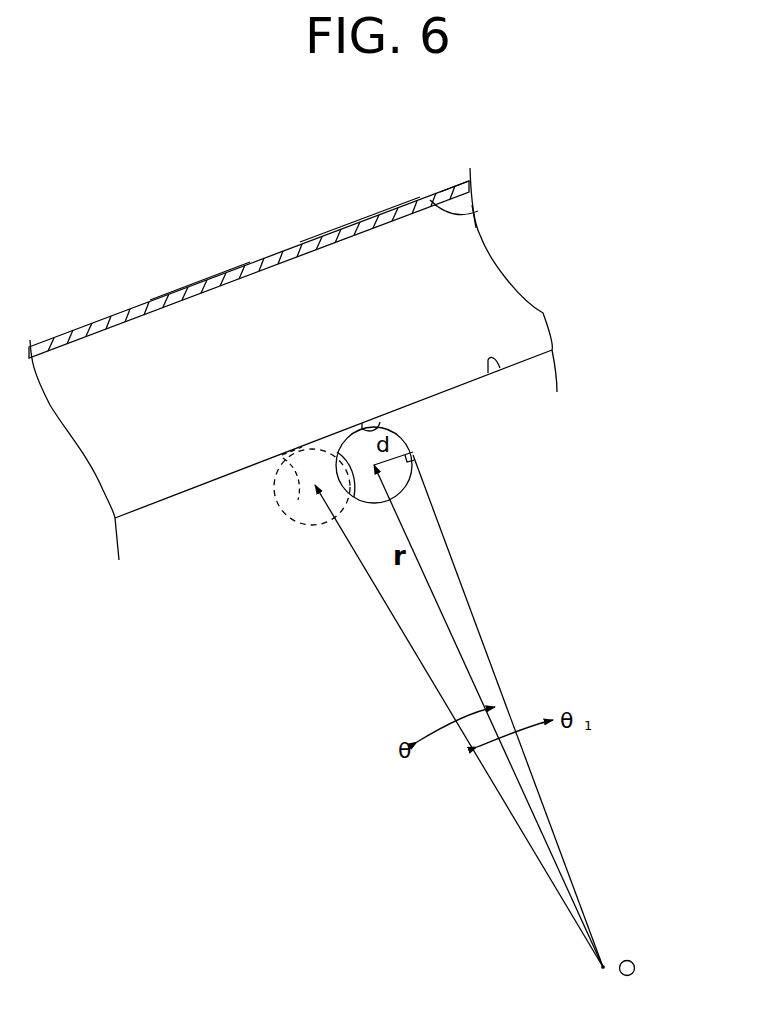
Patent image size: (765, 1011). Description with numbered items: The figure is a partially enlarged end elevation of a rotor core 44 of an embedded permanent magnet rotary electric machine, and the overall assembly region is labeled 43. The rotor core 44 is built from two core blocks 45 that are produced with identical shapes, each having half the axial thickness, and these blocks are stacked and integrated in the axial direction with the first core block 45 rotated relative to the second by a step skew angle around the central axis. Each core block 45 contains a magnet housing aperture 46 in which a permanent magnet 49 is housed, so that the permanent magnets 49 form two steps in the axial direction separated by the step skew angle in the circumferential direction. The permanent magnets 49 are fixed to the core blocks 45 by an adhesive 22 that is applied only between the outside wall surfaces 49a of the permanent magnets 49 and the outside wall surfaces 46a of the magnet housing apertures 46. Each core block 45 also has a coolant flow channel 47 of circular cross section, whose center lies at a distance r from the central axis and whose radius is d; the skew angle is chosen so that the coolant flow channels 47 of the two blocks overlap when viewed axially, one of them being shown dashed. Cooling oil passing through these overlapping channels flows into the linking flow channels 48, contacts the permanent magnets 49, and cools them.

The adhesive 22 is at (346, 230).
The holding portion 43 is at (275, 158).
The rotor core 44 is at (125, 262).
The core block 45 is at (194, 250).
The magnet housing aperture 46 is at (500, 368).
The outside wall surface of magnet housing aperture 46a is at (415, 199).
The coolant flow channel 47 is at (410, 437).
The linking flow channel 48 is at (362, 424).
The permanent magnet 49 is at (476, 240).
The outside wall surface of permanent magnet 49a is at (478, 208).